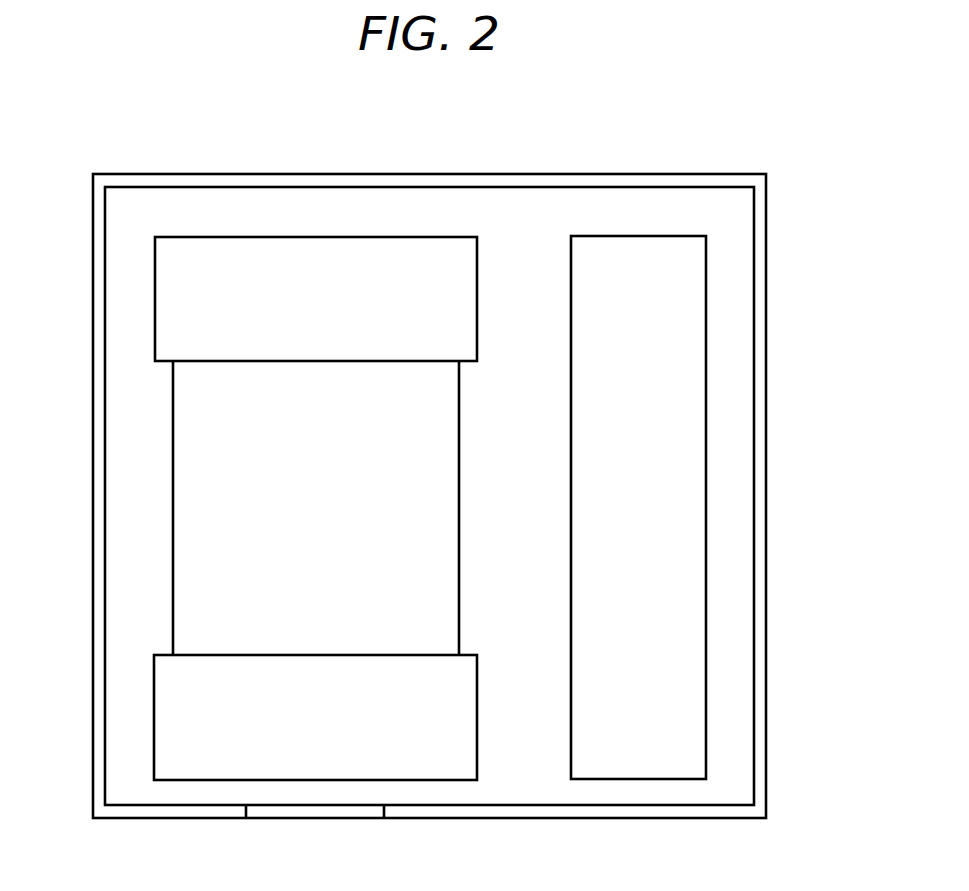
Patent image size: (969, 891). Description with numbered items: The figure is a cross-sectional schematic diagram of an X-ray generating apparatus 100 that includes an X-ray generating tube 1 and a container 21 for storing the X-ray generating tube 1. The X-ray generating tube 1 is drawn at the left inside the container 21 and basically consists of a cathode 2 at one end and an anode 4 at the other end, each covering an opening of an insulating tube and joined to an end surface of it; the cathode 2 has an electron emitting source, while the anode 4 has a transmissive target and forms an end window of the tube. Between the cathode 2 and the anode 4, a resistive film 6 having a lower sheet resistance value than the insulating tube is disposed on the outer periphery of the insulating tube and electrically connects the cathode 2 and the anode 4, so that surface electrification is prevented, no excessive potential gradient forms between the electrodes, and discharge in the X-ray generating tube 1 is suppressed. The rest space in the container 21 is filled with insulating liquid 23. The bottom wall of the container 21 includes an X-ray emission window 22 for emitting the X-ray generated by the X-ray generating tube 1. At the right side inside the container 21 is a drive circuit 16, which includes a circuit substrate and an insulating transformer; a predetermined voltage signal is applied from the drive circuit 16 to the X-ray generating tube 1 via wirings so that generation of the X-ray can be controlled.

The X-ray generating apparatus 100 is at (644, 158).
The X-ray generating tube 1 is at (165, 498).
The cathode 2 is at (180, 291).
The anode 4 is at (178, 697).
The resistive film 6 is at (192, 558).
The drive circuit 16 is at (697, 739).
The container 21 is at (762, 482).
The X-ray emission window 22 is at (269, 812).
The insulating liquid 23 is at (739, 792).